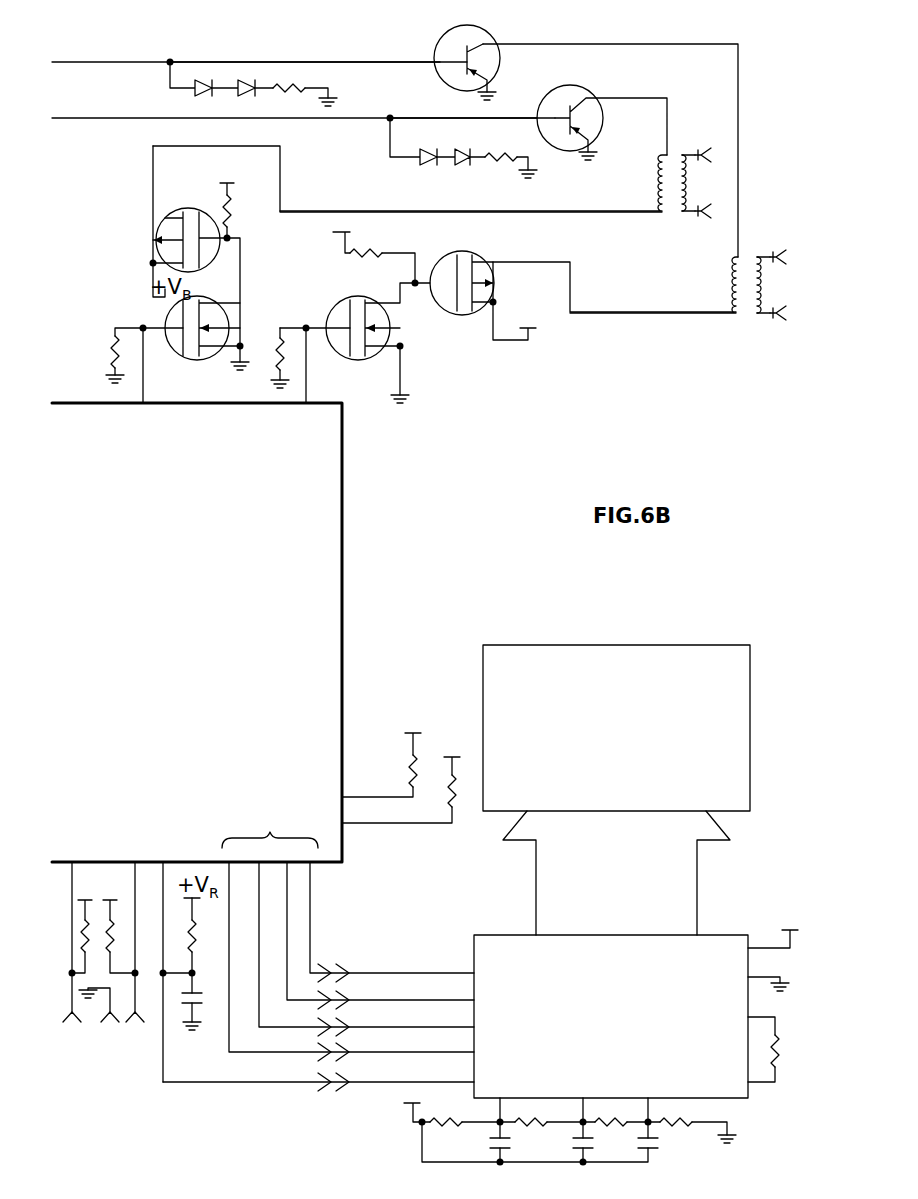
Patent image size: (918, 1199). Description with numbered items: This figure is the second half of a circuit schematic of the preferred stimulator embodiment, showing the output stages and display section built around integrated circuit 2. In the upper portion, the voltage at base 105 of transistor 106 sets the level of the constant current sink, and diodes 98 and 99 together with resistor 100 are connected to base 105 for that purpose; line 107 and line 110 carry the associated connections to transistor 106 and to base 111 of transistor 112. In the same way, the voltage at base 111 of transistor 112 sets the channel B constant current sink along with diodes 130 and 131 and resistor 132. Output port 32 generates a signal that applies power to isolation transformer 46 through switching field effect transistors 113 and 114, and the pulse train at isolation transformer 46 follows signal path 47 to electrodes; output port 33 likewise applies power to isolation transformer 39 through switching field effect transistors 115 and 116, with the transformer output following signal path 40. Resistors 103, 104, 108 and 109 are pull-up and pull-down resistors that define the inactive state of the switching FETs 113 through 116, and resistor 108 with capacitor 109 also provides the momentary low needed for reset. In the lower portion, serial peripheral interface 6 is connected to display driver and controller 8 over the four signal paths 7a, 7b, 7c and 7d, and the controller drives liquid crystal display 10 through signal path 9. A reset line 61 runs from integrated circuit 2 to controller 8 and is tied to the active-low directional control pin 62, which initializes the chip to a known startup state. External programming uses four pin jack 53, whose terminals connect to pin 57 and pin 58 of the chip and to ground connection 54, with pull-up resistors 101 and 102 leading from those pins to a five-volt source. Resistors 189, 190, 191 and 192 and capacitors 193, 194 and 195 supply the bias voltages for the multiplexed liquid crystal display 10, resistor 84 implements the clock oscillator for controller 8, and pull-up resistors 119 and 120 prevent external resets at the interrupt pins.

The integrated circuit 2 is at (343, 517).
The serial peripheral interface 6 is at (270, 829).
The signal path 7a is at (386, 974).
The signal path 7b is at (396, 1002).
The signal path 7c is at (402, 1029).
The signal path 7d is at (414, 1056).
The display driver and controller 8 is at (512, 932).
The signal path 9 is at (698, 893).
The liquid crystal display 10 is at (581, 645).
The output port 32 is at (304, 404).
The output port 33 is at (145, 404).
The isolation transformer 39 is at (663, 222).
The signal path 40 is at (690, 150).
The isolation transformer 46 is at (739, 322).
The signal path 47 is at (766, 253).
The four pin jack 53 is at (91, 1028).
The ground connection 54 is at (112, 1024).
The pin 57 is at (73, 862).
The pin 58 is at (135, 862).
The reset line 61 is at (205, 1084).
The directional control pin 62 is at (170, 862).
The resistor 84 is at (778, 1072).
The diode 98 is at (196, 92).
The diode 99 is at (243, 80).
The resistor 100 is at (294, 84).
The pull-up resistor 101 is at (80, 942).
The pull-up resistor 102 is at (118, 944).
The resistor 103 is at (110, 352).
The resistor 104 is at (93, 62).
The base 105 is at (383, 62).
The transistor 106 is at (488, 36).
The collector line 107 is at (493, 47).
The resistor 108 is at (272, 344).
The resistor 109 is at (383, 250).
The line 110 is at (76, 118).
The base 111 is at (523, 119).
The transistor 112 is at (582, 96).
The switching field effect transistor 113 is at (370, 360).
The switching field effect transistor 114 is at (477, 314).
The switching field effect transistor 115 is at (206, 302).
The switching field effect transistor 116 is at (192, 208).
The pull-up resistor 119 is at (408, 768).
The pull-up resistor 120 is at (460, 802).
The diode 130 is at (424, 150).
The diode 131 is at (459, 166).
The resistor 132 is at (500, 164).
The resistor 189 is at (432, 1128).
The resistor 190 is at (529, 1118).
The resistor 191 is at (603, 1118).
The resistor 192 is at (671, 1118).
The capacitor 193 is at (494, 1144).
The capacitor 194 is at (578, 1144).
The capacitor 195 is at (662, 1146).